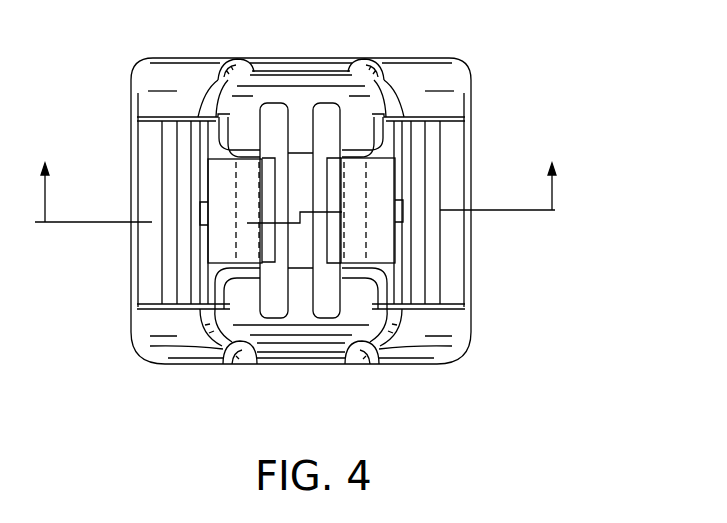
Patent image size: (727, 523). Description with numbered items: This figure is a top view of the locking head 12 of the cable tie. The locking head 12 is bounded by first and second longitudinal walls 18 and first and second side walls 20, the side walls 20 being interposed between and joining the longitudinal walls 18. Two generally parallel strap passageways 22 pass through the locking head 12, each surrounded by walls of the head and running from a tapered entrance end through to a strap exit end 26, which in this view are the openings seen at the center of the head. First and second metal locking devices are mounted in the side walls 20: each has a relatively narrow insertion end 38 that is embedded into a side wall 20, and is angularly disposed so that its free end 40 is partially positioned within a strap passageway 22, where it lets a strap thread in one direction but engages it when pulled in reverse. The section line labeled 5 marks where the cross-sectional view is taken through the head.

The locking head 12 is at (327, 224).
The longitudinal wall 18 is at (306, 365).
The side wall 20 is at (422, 230).
The strap passageway 22 is at (276, 130).
The strap exit end 26 is at (323, 127).
The insertion end 38 is at (207, 210).
The free end 40 is at (222, 243).
The section line 5- 5 is at (297, 174).